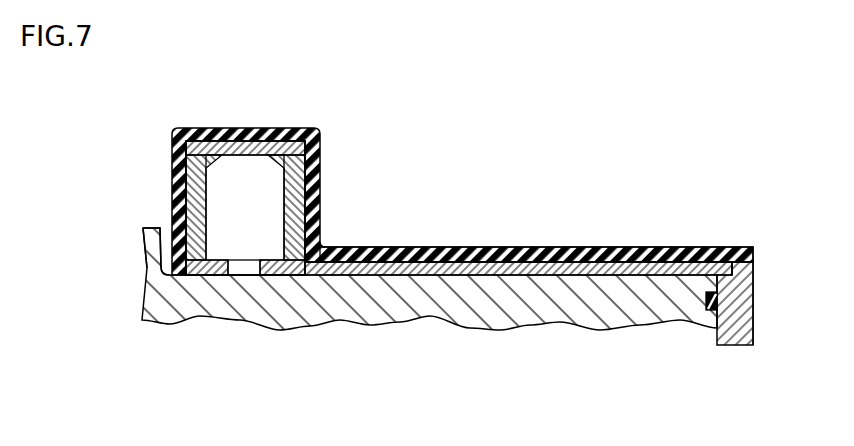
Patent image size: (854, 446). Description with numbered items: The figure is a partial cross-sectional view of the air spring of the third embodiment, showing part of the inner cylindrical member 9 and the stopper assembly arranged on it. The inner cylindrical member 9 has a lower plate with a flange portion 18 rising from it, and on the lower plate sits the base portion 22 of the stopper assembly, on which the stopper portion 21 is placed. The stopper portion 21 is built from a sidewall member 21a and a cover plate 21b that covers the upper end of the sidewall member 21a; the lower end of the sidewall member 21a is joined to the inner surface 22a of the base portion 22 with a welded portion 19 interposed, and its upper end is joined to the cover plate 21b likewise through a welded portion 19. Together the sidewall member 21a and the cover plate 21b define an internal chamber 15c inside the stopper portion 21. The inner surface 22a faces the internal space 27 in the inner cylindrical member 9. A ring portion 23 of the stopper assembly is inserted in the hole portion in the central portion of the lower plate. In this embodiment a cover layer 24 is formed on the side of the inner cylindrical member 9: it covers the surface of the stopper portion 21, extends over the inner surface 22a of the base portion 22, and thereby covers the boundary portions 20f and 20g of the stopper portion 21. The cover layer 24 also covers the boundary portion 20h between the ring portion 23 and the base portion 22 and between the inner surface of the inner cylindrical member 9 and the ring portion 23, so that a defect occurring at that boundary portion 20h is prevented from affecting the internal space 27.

The inner cylindrical member 9 is at (400, 305).
The internal chamber 15c is at (223, 237).
The flange portion 18 is at (152, 242).
The welded portion 19 is at (243, 150).
The boundary portion 20f is at (295, 160).
The boundary portion 20g is at (295, 260).
The boundary portion 20h is at (725, 272).
The stopper portion 21 is at (220, 86).
The sidewall member 21a is at (187, 183).
The cover plate 21b is at (243, 156).
The base portion 22 is at (500, 268).
The inner surface 22a is at (590, 262).
The ring portion 23 is at (728, 337).
The cover layer 24 is at (463, 257).
The internal space 27 is at (523, 119).